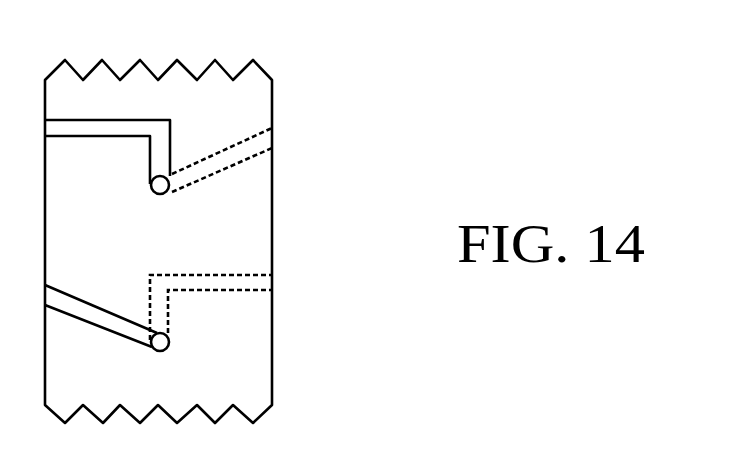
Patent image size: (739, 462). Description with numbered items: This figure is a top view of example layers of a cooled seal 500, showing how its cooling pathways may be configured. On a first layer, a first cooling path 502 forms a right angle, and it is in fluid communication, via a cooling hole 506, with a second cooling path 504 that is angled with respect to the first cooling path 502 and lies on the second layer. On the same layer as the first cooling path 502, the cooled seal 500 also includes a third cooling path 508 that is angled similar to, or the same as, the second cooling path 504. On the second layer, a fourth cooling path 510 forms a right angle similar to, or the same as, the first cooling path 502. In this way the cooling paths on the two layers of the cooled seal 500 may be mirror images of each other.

The cooled seal 500 is at (422, 43).
The first cooling path 502 is at (170, 138).
The second cooling path 504 is at (242, 138).
The cooling hole 506 is at (163, 195).
The third cooling path 508 is at (70, 297).
The fourth cooling path 510 is at (243, 272).